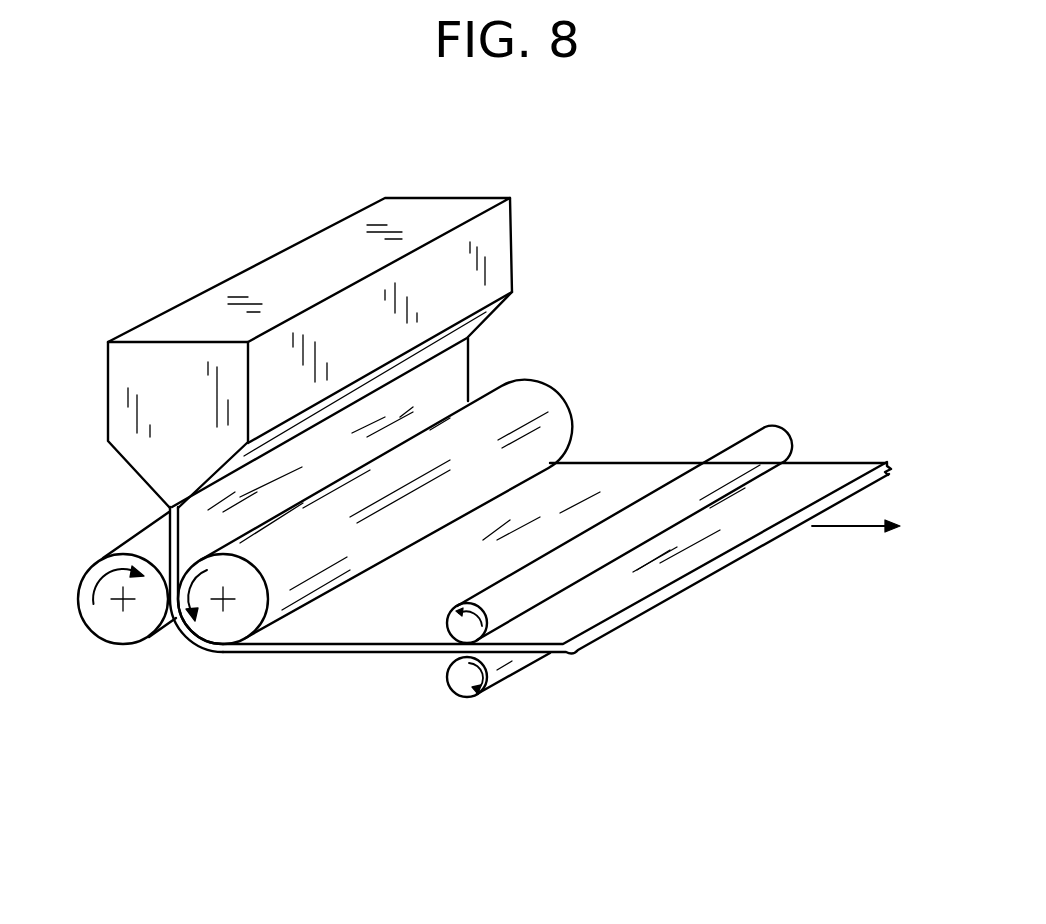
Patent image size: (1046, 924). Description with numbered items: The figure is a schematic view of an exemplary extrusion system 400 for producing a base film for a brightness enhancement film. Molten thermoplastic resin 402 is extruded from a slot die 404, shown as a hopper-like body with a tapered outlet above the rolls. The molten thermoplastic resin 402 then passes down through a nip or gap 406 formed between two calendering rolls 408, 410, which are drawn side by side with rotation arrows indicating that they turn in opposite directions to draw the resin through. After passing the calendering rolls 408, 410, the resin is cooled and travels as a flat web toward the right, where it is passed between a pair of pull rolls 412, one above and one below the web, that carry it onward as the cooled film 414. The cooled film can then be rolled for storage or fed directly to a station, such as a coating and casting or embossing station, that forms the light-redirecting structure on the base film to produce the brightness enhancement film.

The extrusion system 400 is at (765, 217).
The molten thermoplastic resin 402 is at (468, 370).
The slot die 404 is at (512, 247).
The nip or gap 406 is at (172, 555).
The calendering roll 408 is at (85, 613).
The calendering roll 410 is at (563, 400).
The pull rolls 412 is at (731, 455).
The coated sheet 414 is at (817, 460).